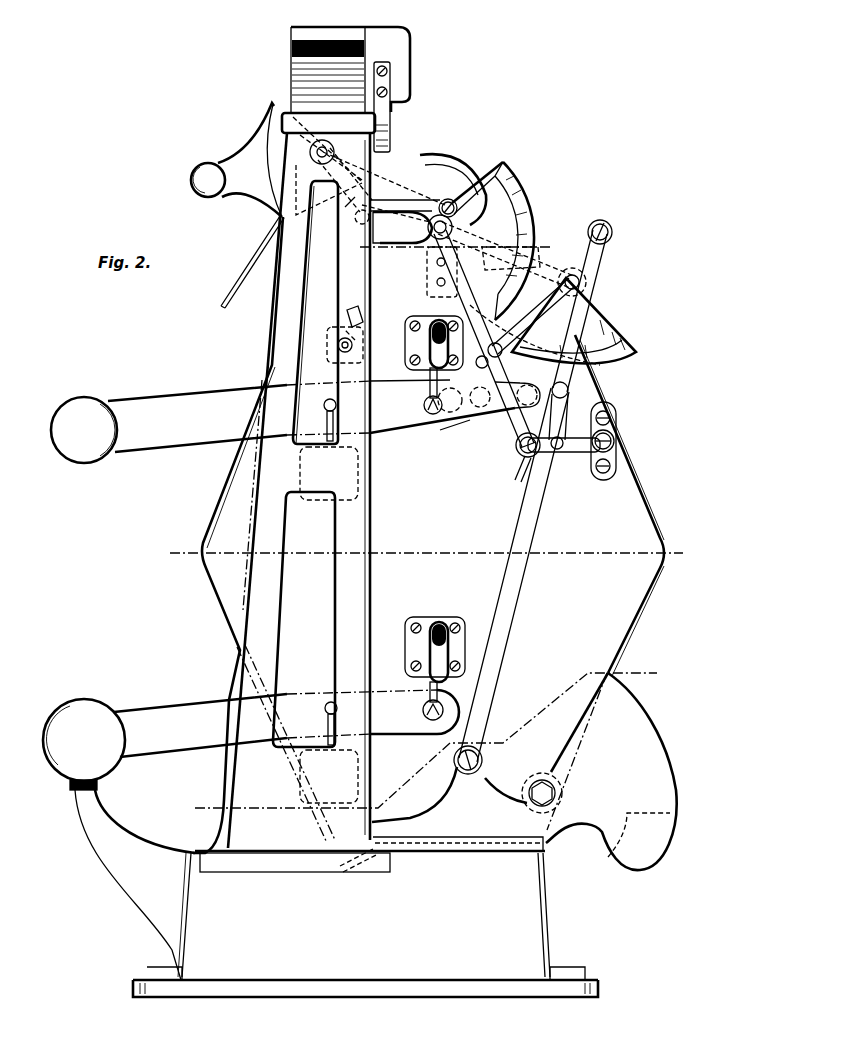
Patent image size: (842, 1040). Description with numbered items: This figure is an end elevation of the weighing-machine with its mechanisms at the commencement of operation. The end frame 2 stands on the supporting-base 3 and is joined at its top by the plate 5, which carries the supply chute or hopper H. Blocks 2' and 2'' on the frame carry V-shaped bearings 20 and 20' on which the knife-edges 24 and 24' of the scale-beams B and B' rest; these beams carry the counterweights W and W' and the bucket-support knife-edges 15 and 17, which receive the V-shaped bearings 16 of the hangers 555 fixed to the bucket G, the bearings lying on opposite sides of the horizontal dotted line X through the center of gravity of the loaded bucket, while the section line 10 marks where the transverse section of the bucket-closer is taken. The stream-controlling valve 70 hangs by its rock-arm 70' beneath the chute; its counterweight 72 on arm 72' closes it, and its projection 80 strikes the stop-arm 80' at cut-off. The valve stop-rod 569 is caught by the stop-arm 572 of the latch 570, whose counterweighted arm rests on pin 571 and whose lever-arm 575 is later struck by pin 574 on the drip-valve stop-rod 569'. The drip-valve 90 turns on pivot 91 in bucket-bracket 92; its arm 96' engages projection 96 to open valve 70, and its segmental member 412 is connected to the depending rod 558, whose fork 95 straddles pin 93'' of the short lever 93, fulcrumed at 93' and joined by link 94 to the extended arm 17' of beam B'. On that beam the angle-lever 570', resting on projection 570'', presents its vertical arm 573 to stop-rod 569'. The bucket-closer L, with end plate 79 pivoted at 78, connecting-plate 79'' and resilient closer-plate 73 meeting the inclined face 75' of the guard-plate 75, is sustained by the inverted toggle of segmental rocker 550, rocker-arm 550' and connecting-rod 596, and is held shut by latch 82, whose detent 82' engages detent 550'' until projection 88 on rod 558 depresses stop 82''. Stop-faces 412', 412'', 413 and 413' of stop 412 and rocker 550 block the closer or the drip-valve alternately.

The supply chute or hopper H is at (397, 51).
The plate or beam 5 is at (360, 120).
The depending stop-arm 80' is at (397, 107).
The end frame 2 is at (389, 482).
The block 2'' is at (349, 473).
The block 2' is at (348, 776).
The arm 72' is at (250, 161).
The counterweight or valve-closer 72 is at (208, 192).
The valve stop-rod 569 is at (232, 262).
The rock-arm 70' is at (312, 176).
The projection 80 is at (371, 190).
The arm 96' is at (406, 198).
The stream-controlling valve 70 is at (412, 227).
The projection 96 is at (396, 237).
The pivot or trunnion 91 is at (426, 262).
The bucket-bracket 92 is at (427, 287).
The drip or drip-retaining valve 90 is at (467, 175).
The segmental member or valve-operative stop 412 is at (510, 241).
The curved stop-face 412' is at (546, 177).
The straight stop-face 412'' is at (525, 147).
The straight stop-face 413' is at (518, 330).
The latch 82 is at (492, 338).
The projection or actuator 88 is at (488, 350).
The vertical arm 573 is at (477, 362).
The stop or detent 550'' is at (518, 286).
The stop or detent 82' is at (506, 257).
The lateral projection or pin 574 is at (580, 278).
The drip-valve stop-rod 569' is at (565, 316).
The segmental rocker 550 is at (586, 321).
The curved stop-face 413 is at (582, 362).
The rocker-arm 550' is at (576, 304).
The hanger or bracket 555 is at (422, 318).
The V-shaped bearing 16 is at (425, 400).
The knife-edge or bucket-support 15 is at (430, 720).
The scale-beam B' is at (239, 428).
The counterweight W' is at (85, 442).
The knife-edge or bucket-support 17 is at (455, 406).
The angle-lever or by-pass 570' is at (458, 389).
The projection 570'' is at (442, 418).
The extended arm 17' is at (440, 441).
The stop 82'' is at (511, 410).
The scale-beam B is at (286, 734).
The counterweight W is at (119, 839).
The knife-edge 24' is at (317, 397).
The V-shaped bearing 20' is at (314, 425).
The knife-edge 24 is at (314, 702).
The V-shaped bearing 20 is at (314, 729).
The lever-arm 575 is at (345, 312).
The latch stop-arm 572 is at (340, 335).
The pivoted latch or lever 570 is at (290, 348).
The stop or pin 571 is at (343, 352).
The link 94 is at (566, 415).
The short lever 93 is at (564, 460).
The depending rod or connecting-rod 558 is at (517, 445).
The pin or projection 93'' is at (502, 461).
The bifurcation or fork 95 is at (518, 478).
The pivot 93' is at (623, 441).
The connecting-rod 596 is at (518, 575).
The bucket G is at (524, 602).
The pivot 78 is at (549, 793).
The counterweighted end plate 79 is at (645, 866).
The section line 10 is at (425, 535).
The dotted line X is at (423, 554).
The bucket-closer L is at (370, 856).
The connecting-plate 79'' is at (445, 857).
The guard-plate 75 is at (297, 827).
The inclined guide-face 75' is at (303, 864).
The closer-plate 73 is at (340, 868).
The supporting-base 3 is at (522, 922).